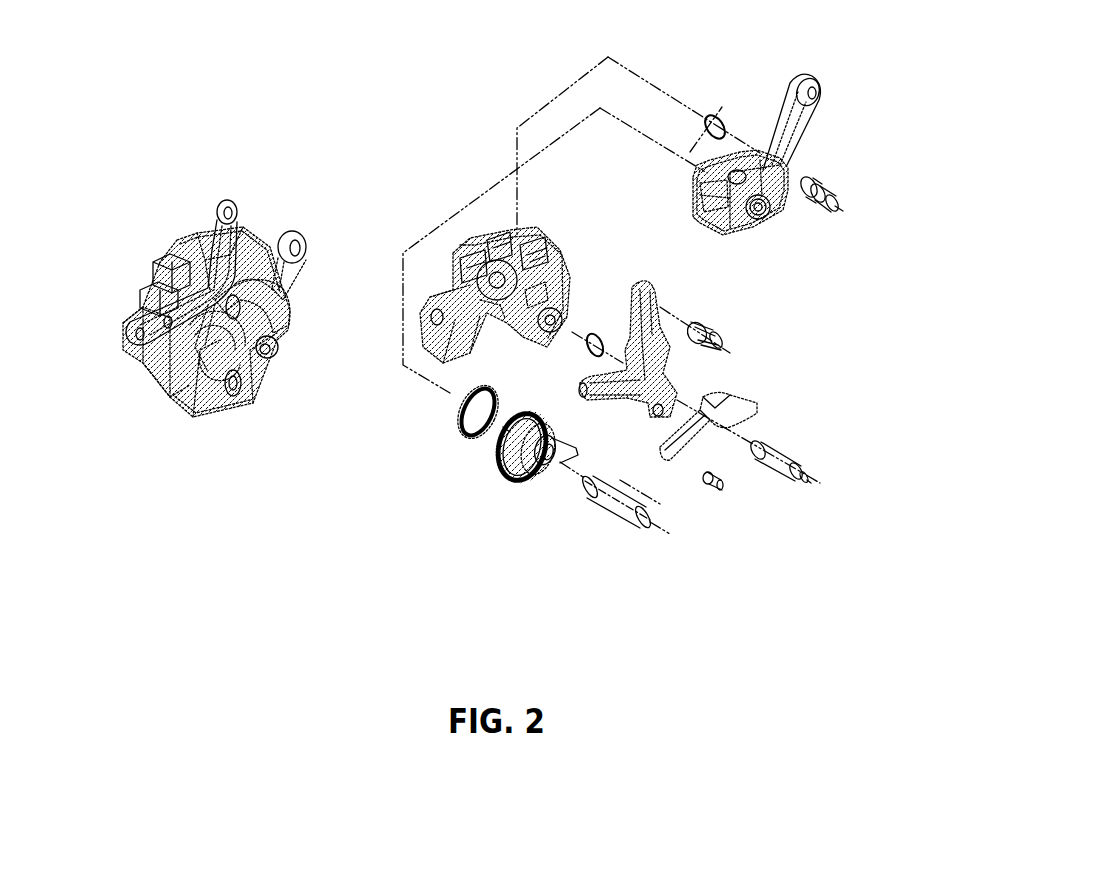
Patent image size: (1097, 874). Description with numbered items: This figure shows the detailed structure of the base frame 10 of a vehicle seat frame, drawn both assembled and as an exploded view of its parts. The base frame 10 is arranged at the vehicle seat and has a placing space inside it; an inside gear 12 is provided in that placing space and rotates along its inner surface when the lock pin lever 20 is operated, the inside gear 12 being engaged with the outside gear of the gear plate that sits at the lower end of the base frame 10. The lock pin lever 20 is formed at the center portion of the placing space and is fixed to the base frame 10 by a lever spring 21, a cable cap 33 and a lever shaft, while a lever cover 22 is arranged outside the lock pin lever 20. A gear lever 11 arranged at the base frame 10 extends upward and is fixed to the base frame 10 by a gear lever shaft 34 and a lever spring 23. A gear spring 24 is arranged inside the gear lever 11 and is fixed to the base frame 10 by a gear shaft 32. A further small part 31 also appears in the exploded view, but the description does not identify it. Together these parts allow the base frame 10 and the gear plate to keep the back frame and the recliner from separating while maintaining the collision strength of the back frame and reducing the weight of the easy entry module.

The base frame 10 is at (175, 260).
The gear lever 11 is at (287, 220).
The inside gear 12 is at (193, 347).
The lock pin lever 20 is at (217, 207).
The lever spring 21 is at (590, 323).
The lever cover 22 is at (267, 300).
The lever spring 23 is at (722, 110).
The gear spring 24 is at (463, 428).
The screw 31 is at (720, 487).
The gear shaft 32 is at (612, 507).
The cable cap 33 is at (717, 330).
The gear lever shaft 34 is at (843, 212).